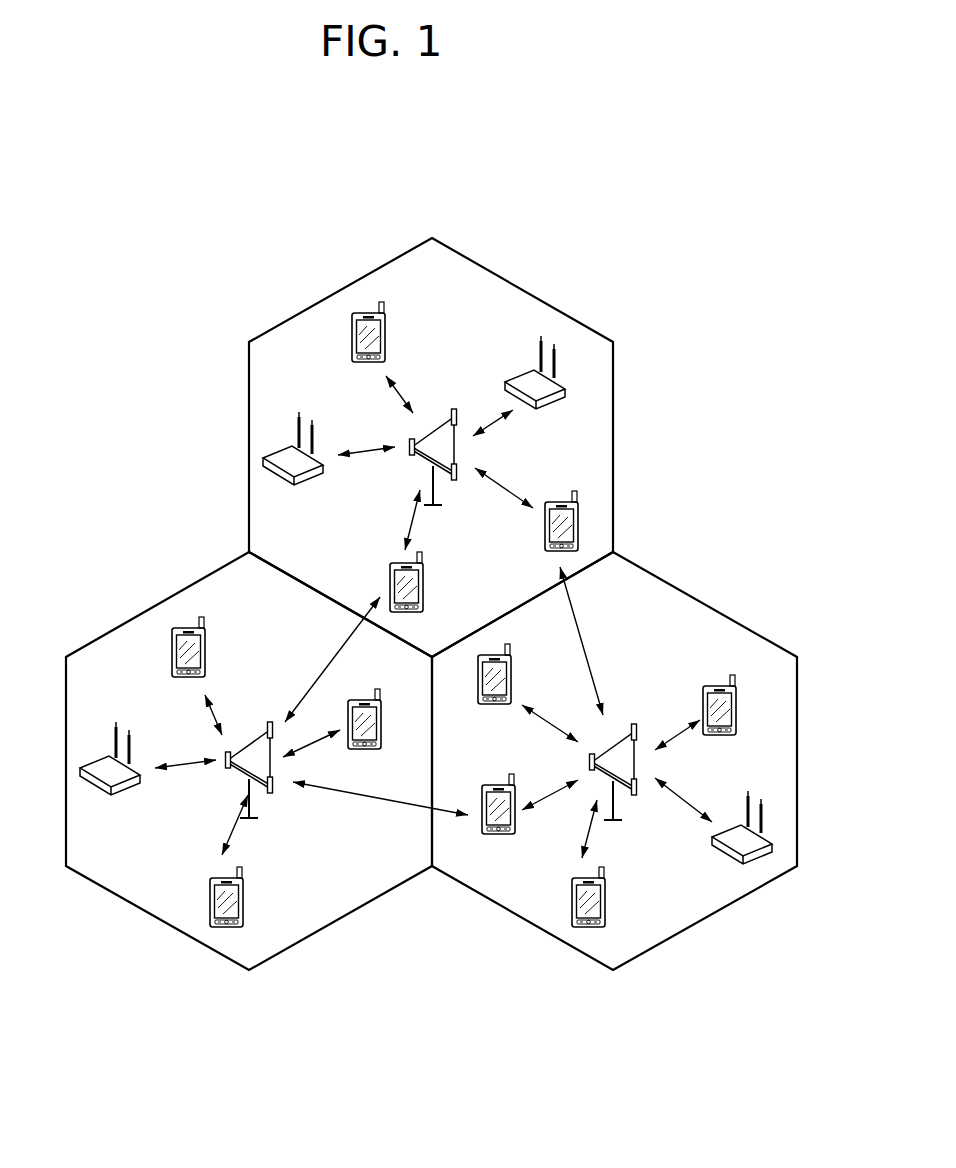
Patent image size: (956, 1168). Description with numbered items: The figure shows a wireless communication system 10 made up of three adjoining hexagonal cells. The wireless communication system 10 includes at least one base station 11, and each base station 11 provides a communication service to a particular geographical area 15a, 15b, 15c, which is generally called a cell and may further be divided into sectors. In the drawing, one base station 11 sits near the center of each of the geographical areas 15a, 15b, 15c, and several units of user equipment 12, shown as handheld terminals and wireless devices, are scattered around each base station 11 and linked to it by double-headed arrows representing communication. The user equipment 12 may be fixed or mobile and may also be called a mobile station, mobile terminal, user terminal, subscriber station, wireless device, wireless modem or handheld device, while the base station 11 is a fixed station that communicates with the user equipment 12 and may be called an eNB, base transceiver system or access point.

The wireless communication system 10 is at (690, 349).
The base station 11 is at (443, 420).
The user equipment 12 is at (386, 334).
The geographical area 15a is at (613, 436).
The geographical area 15b is at (733, 620).
The geographical area 15c is at (133, 618).